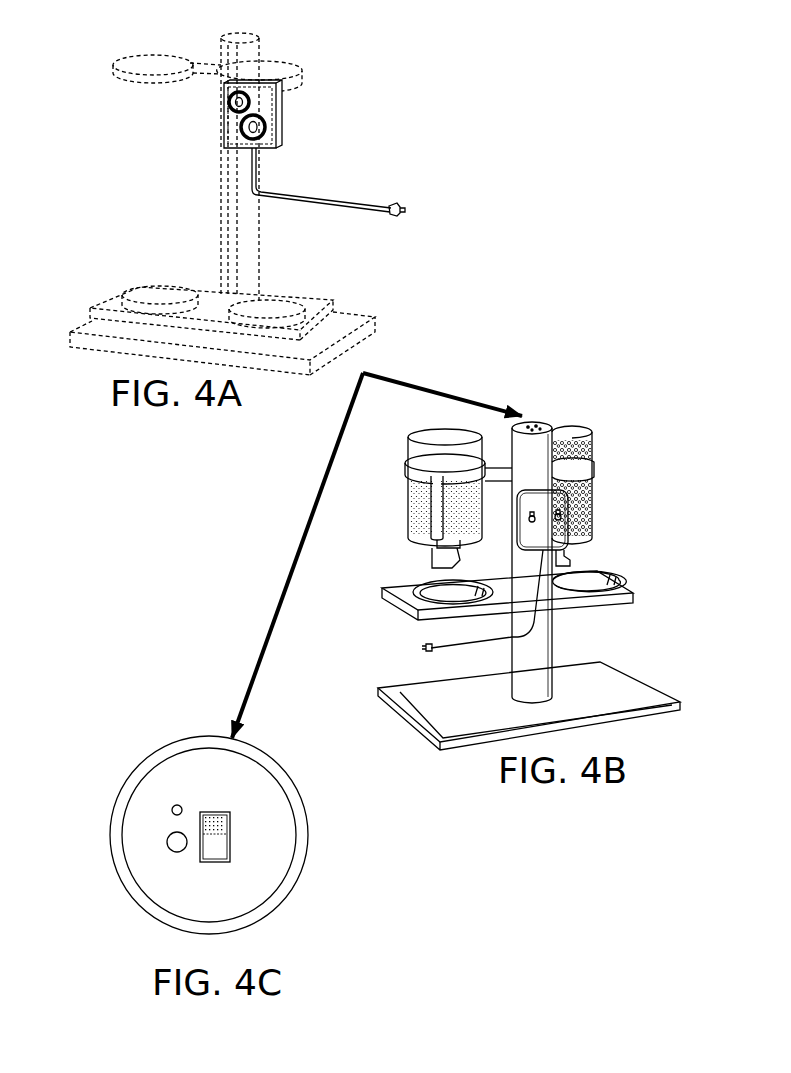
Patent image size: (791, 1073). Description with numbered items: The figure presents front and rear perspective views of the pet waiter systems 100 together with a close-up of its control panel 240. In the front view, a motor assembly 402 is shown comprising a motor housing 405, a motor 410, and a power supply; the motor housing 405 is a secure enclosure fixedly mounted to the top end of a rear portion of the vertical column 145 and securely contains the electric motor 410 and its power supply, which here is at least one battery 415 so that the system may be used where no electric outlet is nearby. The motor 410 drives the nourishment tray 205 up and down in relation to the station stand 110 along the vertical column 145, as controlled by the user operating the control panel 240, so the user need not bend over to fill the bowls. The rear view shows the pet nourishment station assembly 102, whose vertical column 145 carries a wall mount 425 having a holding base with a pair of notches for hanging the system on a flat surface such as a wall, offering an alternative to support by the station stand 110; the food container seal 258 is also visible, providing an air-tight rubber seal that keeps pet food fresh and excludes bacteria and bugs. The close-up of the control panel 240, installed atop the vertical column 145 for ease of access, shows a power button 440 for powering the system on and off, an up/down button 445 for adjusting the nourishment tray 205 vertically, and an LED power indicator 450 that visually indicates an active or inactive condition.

In FIG. 4A, the pet waiter systems 100 is at (606, 84).
In FIG. 4A, the pet nourishment station assembly 102 is at (636, 132).
In FIG. 4A, the motor assembly 402 is at (295, 145).
In FIG. 4A, the motor housing 405 is at (283, 97).
In FIG. 4A, the motor 410 is at (264, 120).
In FIG. 4A, the battery 415 is at (232, 128).
In FIG. 4B, the control panel 240 is at (536, 418).
In FIG. 4C, the control panel 240 is at (316, 828).
In FIG. 4B, the food container seal 258 is at (578, 423).
In FIG. 4B, the wall mount 425 is at (547, 524).
In FIG. 4B, the nourishment tray 205 is at (395, 623).
In FIG. 4B, the vertical column 145 is at (546, 660).
In FIG. 4B, the station stand 110 is at (471, 705).
In FIG. 4C, the power button 440 is at (170, 842).
In FIG. 4C, the up/down button 445 is at (213, 814).
In FIG. 4C, the LED power indicator 450 is at (177, 802).